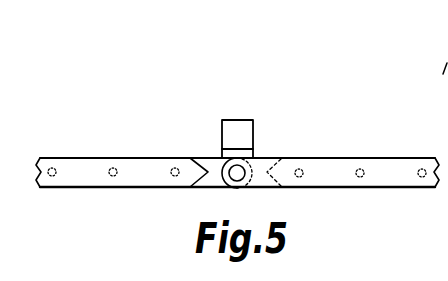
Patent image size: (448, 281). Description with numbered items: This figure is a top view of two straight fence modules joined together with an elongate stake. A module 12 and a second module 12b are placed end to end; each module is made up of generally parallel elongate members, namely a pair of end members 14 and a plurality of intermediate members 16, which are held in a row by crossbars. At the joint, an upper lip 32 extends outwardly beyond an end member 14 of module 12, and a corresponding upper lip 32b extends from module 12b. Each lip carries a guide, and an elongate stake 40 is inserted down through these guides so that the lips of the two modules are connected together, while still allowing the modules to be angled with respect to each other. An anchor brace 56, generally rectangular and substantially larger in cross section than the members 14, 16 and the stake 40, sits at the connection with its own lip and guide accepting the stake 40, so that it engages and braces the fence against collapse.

The module 12 is at (80, 134).
The second module 12b is at (315, 135).
The end members 14 is at (174, 167).
The intermediate members 16 is at (111, 177).
The upper lip 32 is at (213, 158).
The upper lip of second module 32b is at (257, 158).
The elongate stake 40 is at (236, 176).
The anchor brace 56 is at (235, 130).